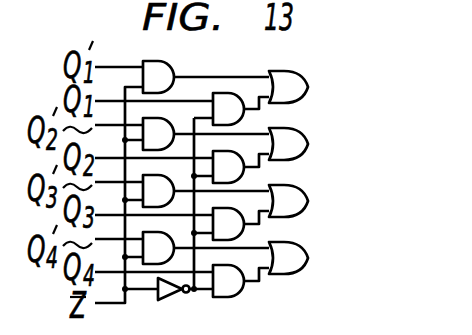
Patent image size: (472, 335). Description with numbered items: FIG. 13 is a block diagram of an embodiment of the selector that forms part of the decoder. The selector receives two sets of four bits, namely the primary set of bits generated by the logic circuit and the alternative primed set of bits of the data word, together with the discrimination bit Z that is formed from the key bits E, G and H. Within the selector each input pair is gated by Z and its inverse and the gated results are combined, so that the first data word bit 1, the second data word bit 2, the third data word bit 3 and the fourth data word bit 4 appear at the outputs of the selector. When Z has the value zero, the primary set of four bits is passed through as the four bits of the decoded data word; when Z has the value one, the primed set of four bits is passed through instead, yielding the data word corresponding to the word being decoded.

The first data word bit 1 is at (308, 87).
The second data word bit 2 is at (308, 144).
The third data word bit 3 is at (308, 201).
The fourth data word bit 4 is at (308, 258).